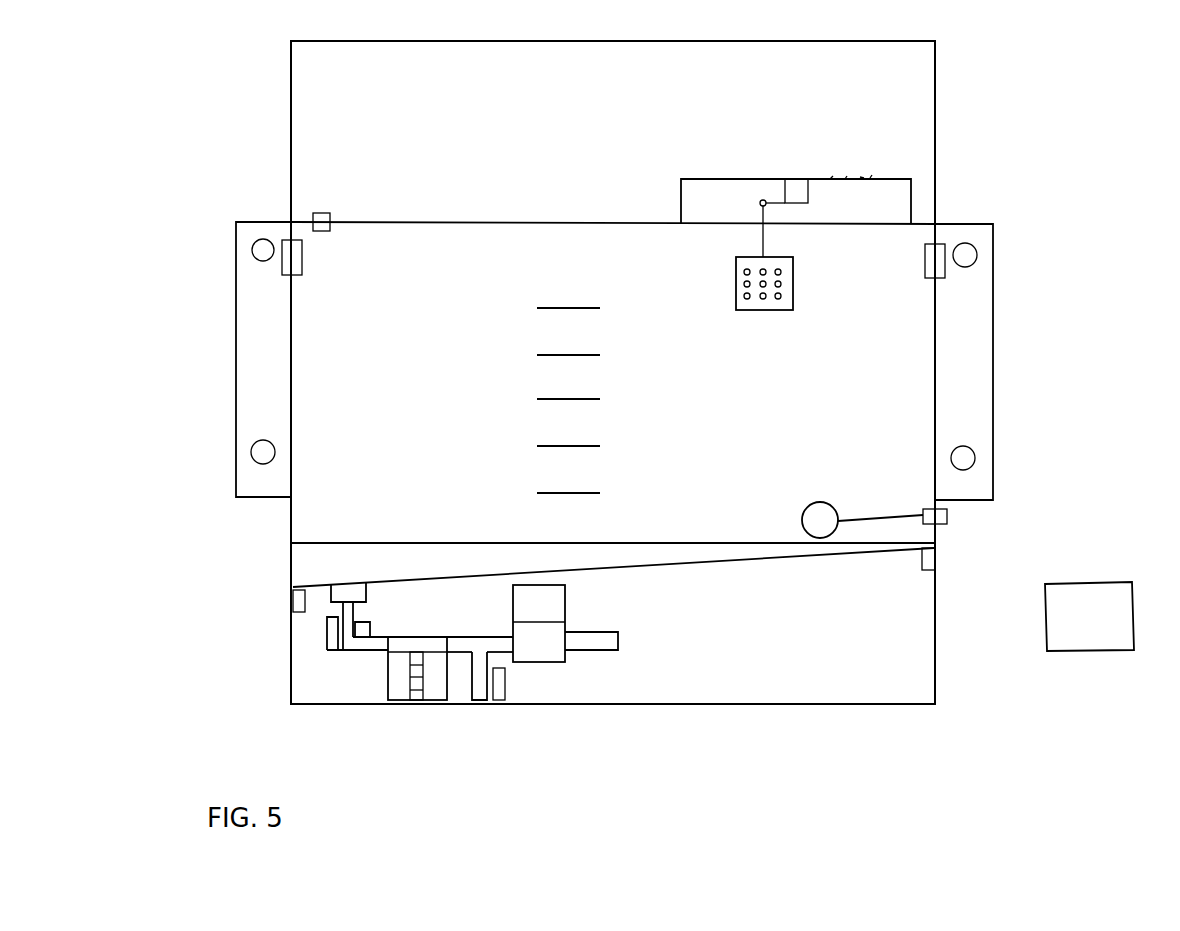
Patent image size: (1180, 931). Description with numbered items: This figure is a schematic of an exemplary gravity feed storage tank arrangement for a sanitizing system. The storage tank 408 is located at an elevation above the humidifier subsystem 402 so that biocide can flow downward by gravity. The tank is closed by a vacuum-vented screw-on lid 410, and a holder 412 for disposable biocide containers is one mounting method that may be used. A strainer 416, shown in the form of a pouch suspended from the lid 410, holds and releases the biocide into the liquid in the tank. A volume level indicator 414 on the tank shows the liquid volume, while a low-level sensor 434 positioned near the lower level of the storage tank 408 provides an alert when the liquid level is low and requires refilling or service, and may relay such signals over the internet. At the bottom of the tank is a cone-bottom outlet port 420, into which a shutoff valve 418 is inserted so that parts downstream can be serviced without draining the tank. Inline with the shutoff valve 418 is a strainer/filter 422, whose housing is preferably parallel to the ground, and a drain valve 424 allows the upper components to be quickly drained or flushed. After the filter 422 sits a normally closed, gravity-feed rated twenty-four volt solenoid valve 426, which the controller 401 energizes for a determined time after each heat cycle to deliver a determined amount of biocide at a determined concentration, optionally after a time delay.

The controller 401 is at (1087, 583).
The humidifier subsystem 402 is at (1001, 97).
The storage tank 408 is at (312, 380).
The vacuum-vented screw-on lid 410 is at (728, 179).
The holder 412 is at (785, 256).
The volume level indicator 414 is at (600, 446).
The strainer 416 is at (783, 292).
The shutoff valve 418 is at (323, 638).
The cone-bottom outlet port 420 is at (342, 593).
The strainer/filter 422 is at (437, 687).
The drain valve 424 is at (483, 693).
The solenoid valve 426 is at (550, 652).
The low-level sensor 434 is at (885, 510).